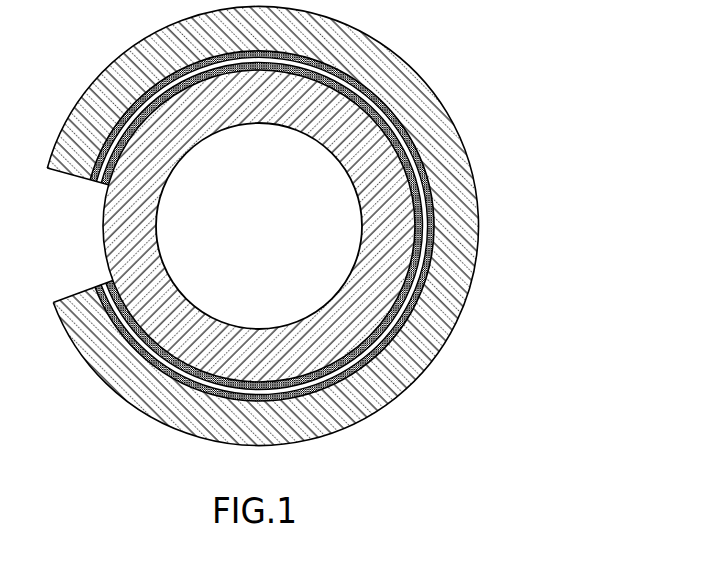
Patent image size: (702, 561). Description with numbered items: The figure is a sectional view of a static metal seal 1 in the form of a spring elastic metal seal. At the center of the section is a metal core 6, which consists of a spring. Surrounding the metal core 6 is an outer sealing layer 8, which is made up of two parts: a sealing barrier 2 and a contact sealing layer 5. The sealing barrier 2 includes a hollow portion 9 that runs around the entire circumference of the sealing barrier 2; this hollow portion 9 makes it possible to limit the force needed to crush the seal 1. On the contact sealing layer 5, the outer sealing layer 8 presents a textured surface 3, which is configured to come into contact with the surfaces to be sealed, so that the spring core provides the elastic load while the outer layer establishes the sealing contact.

The static metal seal 1 is at (321, 225).
The sealing barrier 2 is at (428, 173).
The textured surface 3 is at (431, 378).
The contact sealing layer 5 is at (453, 230).
The metal core 6 is at (412, 288).
The outer sealing layer 8 is at (343, 226).
The hollow portion 9 is at (398, 107).